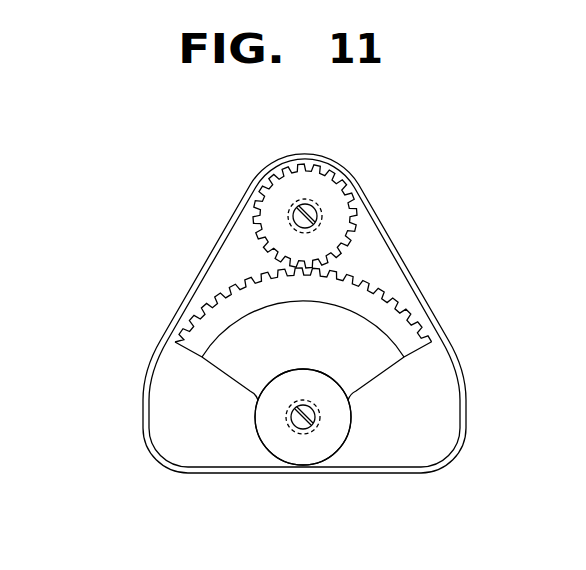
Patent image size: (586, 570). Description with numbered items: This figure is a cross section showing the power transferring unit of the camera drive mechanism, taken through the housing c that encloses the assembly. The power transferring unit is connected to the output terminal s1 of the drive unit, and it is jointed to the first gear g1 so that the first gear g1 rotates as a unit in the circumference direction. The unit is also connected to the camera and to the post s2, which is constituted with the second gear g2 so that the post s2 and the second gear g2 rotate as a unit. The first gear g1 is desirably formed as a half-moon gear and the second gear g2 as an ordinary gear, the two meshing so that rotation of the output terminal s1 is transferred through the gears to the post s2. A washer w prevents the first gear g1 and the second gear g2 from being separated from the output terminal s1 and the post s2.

The casing c is at (146, 408).
The first gear g1 is at (372, 381).
The second gear g2 is at (345, 201).
The output terminal s1 is at (316, 424).
The post s2 is at (292, 212).
The washer w is at (290, 424).